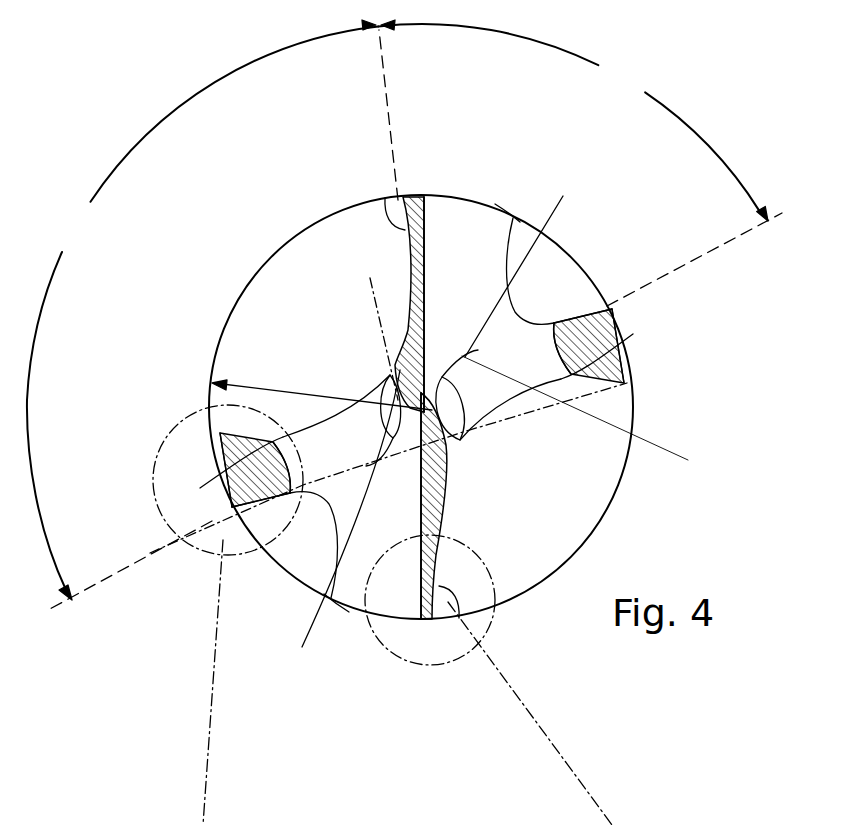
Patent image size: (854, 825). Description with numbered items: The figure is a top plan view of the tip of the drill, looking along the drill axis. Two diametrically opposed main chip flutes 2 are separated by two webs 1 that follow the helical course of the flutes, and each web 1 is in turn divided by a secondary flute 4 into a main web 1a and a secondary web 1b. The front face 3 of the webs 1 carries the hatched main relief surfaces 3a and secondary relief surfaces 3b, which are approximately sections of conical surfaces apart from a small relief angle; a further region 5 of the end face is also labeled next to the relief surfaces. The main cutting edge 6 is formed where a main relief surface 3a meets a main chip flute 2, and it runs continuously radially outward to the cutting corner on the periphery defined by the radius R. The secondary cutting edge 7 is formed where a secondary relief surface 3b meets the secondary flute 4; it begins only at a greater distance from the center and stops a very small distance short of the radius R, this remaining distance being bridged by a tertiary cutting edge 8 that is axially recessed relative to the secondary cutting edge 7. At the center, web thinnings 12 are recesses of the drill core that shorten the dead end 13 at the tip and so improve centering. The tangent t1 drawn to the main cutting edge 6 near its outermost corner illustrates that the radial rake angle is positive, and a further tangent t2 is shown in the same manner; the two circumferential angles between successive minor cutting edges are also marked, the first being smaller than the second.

The web 1 is at (505, 345).
The main web 1a is at (475, 232).
The secondary web 1b is at (627, 352).
The main chip flute 2 is at (318, 263).
The front face of the webs 3 is at (446, 318).
The main relief surface 3a is at (428, 199).
The secondary relief surface 3b is at (633, 334).
The secondary flute 4 is at (255, 625).
The flank face 5 is at (498, 206).
The main cutting edge 6 is at (404, 230).
The secondary cutting edge 7 is at (607, 312).
The tertiary cutting edge 8 is at (615, 316).
The web thinning 12 is at (388, 398).
The dead end 13 is at (590, 420).
The radius R is at (212, 378).
The tangent t1 is at (372, 323).
The tangent line 2 t2 is at (548, 412).